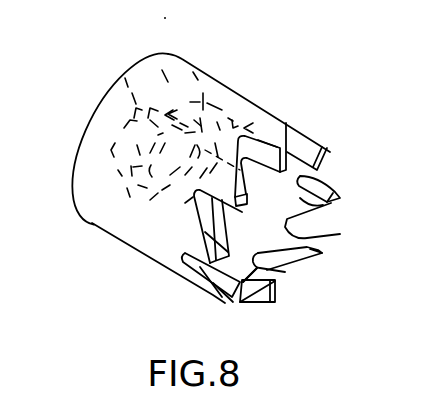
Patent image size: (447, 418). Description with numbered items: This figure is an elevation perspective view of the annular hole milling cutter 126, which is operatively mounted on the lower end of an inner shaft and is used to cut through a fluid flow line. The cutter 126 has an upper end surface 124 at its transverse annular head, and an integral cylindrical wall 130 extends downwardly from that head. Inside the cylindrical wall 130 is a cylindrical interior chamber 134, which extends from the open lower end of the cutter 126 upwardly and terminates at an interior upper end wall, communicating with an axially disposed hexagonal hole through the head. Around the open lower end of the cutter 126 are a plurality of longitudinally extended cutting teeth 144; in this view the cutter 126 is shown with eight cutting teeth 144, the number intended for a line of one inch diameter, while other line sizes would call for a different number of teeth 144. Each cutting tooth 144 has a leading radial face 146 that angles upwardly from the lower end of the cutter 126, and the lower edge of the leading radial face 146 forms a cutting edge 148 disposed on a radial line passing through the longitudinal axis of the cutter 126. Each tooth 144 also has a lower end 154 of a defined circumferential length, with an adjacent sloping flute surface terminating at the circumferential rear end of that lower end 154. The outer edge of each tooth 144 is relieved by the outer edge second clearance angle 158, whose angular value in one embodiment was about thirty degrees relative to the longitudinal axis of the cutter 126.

The upper end surface 124 is at (160, 53).
The annular hole milling cutter 126 is at (89, 224).
The cylindrical wall 130 is at (220, 92).
The cylindrical interior chamber 134 is at (121, 68).
The cutting teeth 144 is at (331, 203).
The leading radial face 146 is at (340, 234).
The cutting edge 148 is at (333, 208).
The lower end of cutter tooth 154 is at (323, 260).
The outer edge second clearance angle 158 is at (212, 297).